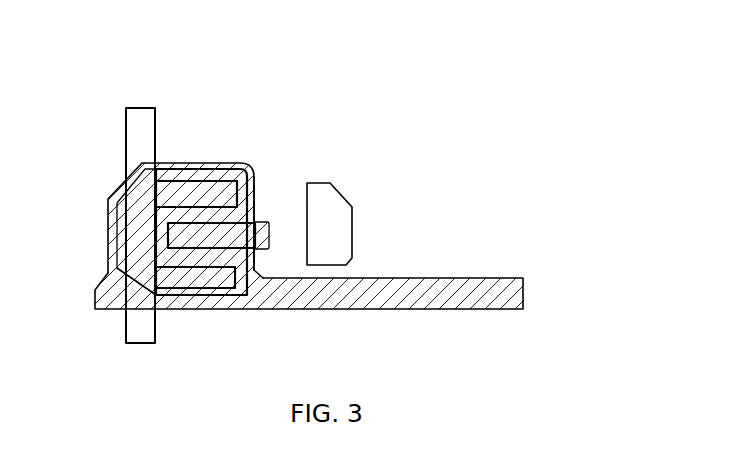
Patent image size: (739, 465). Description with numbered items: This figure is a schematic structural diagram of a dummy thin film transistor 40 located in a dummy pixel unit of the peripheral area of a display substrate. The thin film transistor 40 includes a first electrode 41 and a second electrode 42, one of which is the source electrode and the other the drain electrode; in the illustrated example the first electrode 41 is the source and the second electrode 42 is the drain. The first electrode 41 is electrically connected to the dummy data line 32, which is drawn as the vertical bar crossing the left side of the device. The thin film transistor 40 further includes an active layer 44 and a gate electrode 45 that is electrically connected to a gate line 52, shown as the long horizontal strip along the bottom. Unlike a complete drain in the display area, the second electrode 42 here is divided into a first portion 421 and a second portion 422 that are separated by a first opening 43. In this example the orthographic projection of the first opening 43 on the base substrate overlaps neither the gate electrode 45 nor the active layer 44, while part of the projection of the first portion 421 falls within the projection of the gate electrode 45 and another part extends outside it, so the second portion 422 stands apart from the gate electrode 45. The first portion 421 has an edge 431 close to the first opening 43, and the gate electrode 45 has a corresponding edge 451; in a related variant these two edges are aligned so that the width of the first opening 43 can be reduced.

The thin film transistor 40 is at (333, 192).
The dummy data line 32 is at (125, 122).
The first electrode 41 is at (195, 190).
The active layer 44 is at (178, 175).
The gate electrode 45 is at (242, 168).
The edge of the gate electrode 451 is at (255, 187).
The second electrode 42 is at (294, 179).
The first portion 421 is at (262, 228).
The second portion 422 is at (337, 210).
The first opening 43 is at (290, 238).
The edge of the first portion 431 is at (270, 246).
The gate line 52 is at (485, 310).